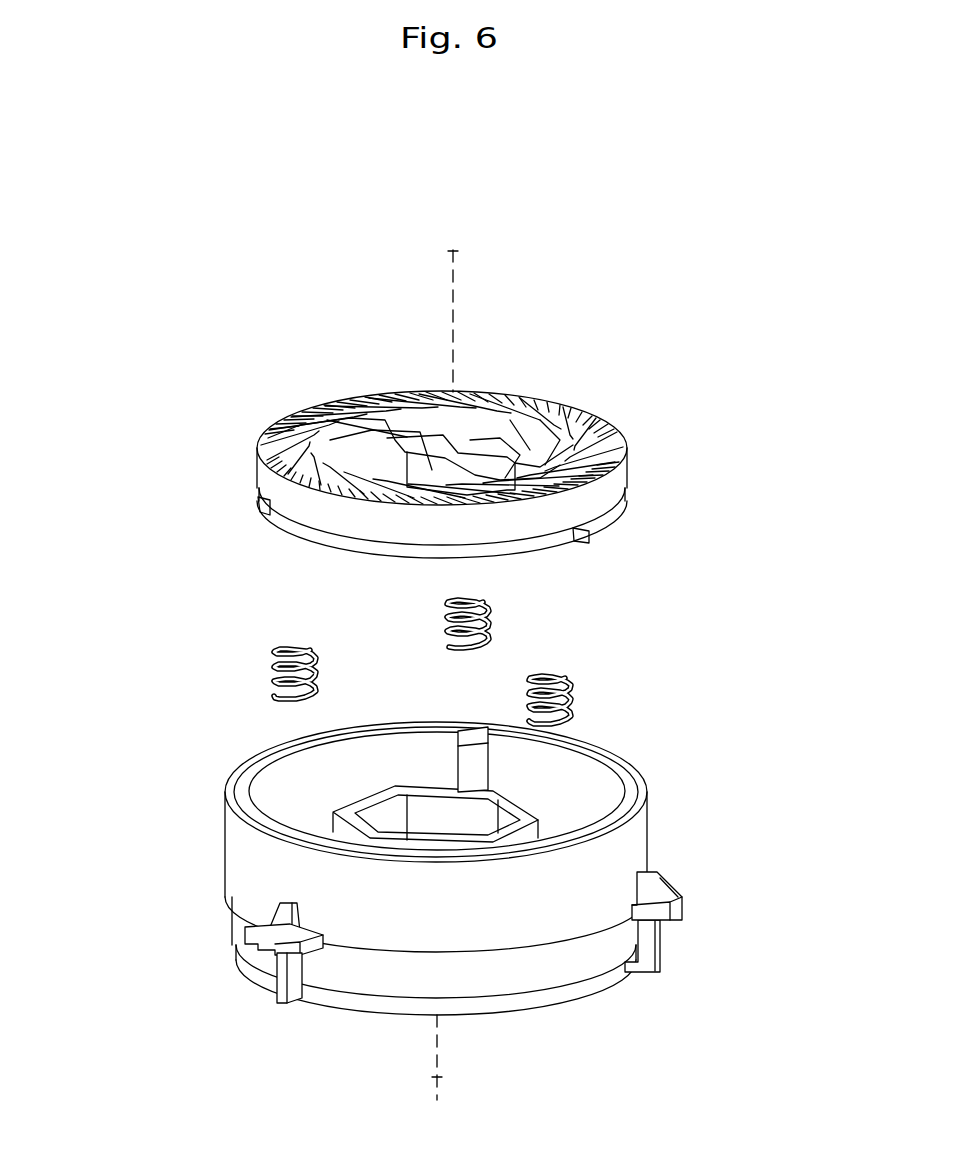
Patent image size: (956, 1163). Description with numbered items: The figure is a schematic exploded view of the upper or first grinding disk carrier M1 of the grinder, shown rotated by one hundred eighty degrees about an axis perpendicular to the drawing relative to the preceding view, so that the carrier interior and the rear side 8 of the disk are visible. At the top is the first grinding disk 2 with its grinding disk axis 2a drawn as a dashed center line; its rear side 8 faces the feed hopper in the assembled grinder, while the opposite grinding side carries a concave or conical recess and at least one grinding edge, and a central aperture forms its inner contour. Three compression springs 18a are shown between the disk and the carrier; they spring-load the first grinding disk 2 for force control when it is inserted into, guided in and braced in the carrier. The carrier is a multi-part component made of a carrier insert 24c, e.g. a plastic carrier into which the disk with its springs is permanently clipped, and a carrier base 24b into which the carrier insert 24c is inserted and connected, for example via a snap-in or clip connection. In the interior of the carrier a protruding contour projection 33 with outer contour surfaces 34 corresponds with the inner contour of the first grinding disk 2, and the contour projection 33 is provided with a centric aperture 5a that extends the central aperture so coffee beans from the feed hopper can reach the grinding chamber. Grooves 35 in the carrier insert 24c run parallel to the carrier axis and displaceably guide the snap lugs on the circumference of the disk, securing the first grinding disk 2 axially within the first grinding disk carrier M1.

The first grinding disk 2 is at (447, 427).
The grinding disk axis 2a is at (452, 257).
The rear side 8 is at (290, 535).
The compression springs 18a is at (277, 660).
The first grinding disk carrier M1 is at (675, 690).
The centric aperture 5a is at (437, 820).
The groove 35 is at (473, 762).
The contour projection 33 is at (344, 735).
The outer contour surfaces 34 is at (337, 832).
The carrier insert 24c is at (620, 857).
The carrier base 24b is at (620, 942).